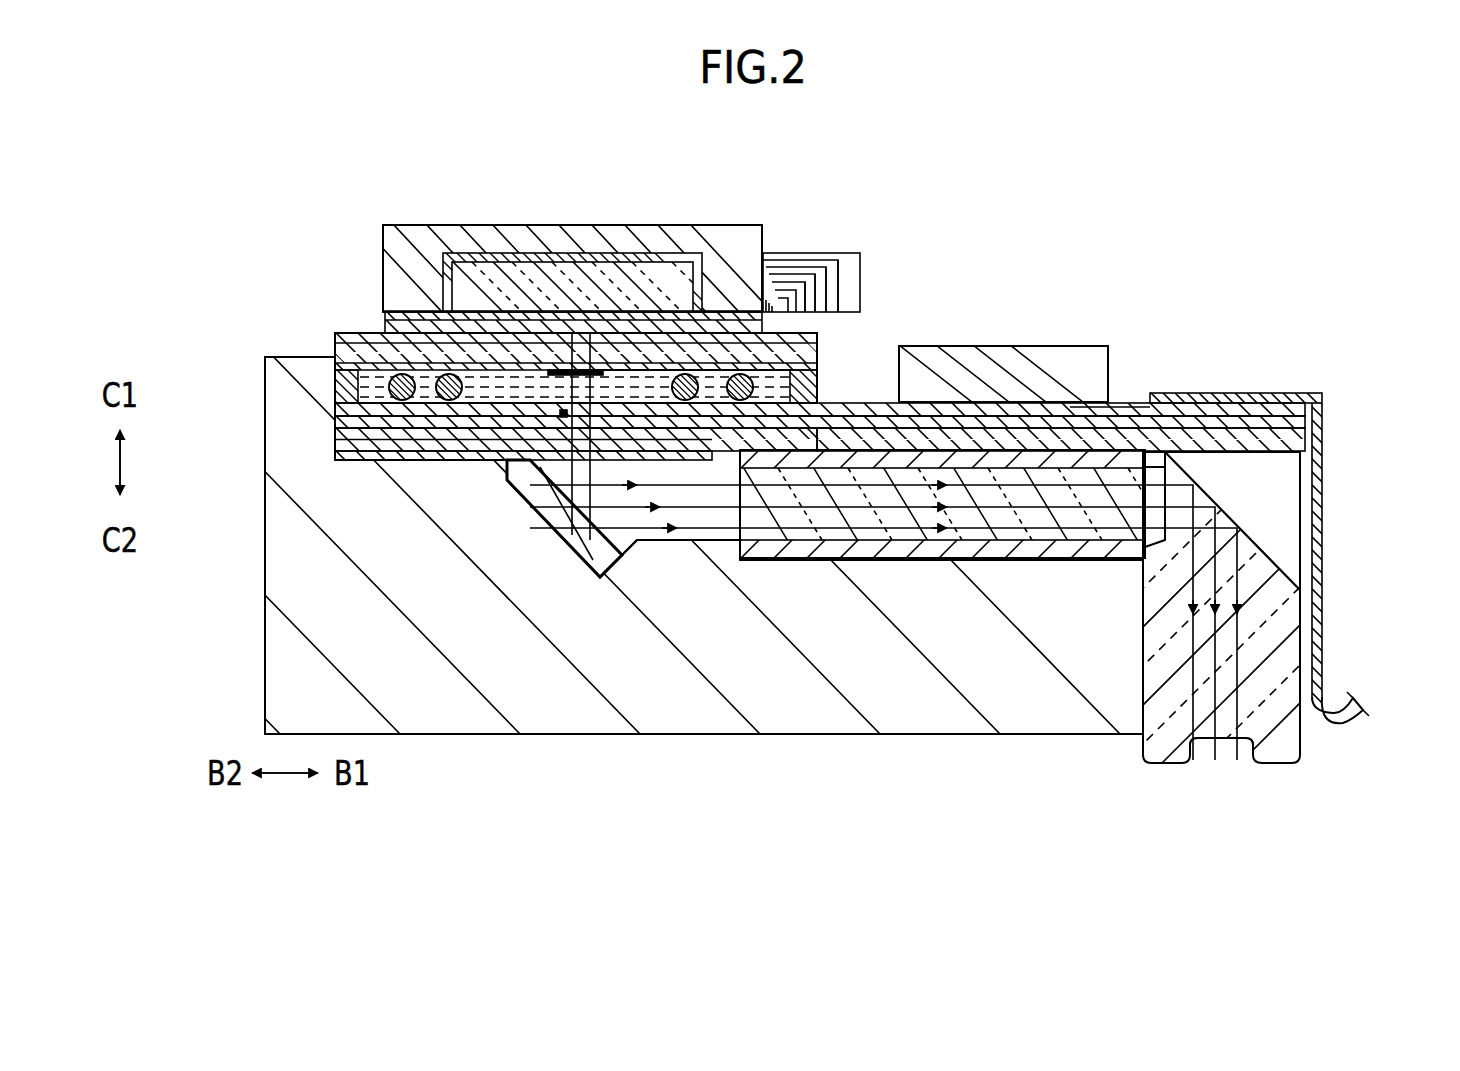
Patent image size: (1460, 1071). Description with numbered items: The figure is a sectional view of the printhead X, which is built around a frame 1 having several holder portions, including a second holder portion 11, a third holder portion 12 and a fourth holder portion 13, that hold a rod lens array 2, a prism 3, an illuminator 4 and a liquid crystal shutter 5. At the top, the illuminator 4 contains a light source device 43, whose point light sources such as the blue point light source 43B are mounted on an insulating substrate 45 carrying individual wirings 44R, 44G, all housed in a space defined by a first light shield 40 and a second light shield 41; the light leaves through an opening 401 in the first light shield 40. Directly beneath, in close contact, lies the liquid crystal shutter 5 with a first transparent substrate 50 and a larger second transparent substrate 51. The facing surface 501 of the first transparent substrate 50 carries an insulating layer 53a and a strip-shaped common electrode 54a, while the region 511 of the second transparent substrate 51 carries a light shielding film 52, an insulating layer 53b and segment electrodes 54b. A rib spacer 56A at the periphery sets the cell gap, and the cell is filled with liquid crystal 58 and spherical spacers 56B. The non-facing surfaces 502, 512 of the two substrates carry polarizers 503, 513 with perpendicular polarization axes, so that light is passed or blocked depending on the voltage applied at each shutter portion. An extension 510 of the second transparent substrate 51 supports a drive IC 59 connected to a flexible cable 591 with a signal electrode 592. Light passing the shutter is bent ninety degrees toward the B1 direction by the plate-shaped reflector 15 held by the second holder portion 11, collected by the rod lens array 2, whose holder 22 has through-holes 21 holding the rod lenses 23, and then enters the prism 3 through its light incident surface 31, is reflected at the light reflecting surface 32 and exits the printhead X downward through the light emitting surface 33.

The frame 1 is at (262, 553).
The rod lens array 2 is at (772, 563).
The prism 3 is at (1265, 542).
The illuminator 4 is at (398, 220).
The liquid crystal shutter 5 is at (1142, 322).
The second holder portion 11 is at (405, 470).
The third holder portion 12 is at (575, 548).
The fourth holder portion 13 is at (975, 563).
The reflector 15 is at (622, 585).
The through-holes 21 is at (900, 545).
The holder 22 is at (827, 563).
The rod lenses 23 is at (1043, 561).
The light incident surface 31 is at (1157, 478).
The light reflecting surface 32 is at (1245, 508).
The light emitting surface 33 is at (1245, 764).
The first light shield 40 is at (383, 323).
The second light shield 41 is at (385, 280).
The light source device 43 is at (787, 250).
The point light source 43B is at (860, 264).
The individual wiring 44G is at (842, 282).
The individual wiring 44R is at (842, 301).
The insulating substrate 45 is at (848, 252).
The first transparent substrate 50 is at (347, 350).
The second transparent substrate 51 is at (343, 441).
The light shielding film 52 is at (332, 423).
The insulating layer 53a is at (820, 367).
The insulating layer 53b is at (332, 412).
The common electrode 54a is at (540, 405).
The segment electrodes 54b is at (335, 399).
The rib spacer 56A is at (815, 381).
The spherical spacers 56B is at (450, 405).
The liquid crystal 58 is at (560, 480).
The drive IC 59 is at (1010, 355).
The opening 401 is at (603, 325).
The facing surface 501 is at (790, 347).
The non-facing surface 502 is at (782, 345).
The polarizer 503 is at (333, 331).
The extension 510 is at (1065, 432).
The region 511 is at (370, 446).
The non-facing surface 512 is at (340, 436).
The polarizer 513 is at (420, 441).
The flexible cable 591 is at (1325, 452).
The signal electrode 592 is at (1318, 586).
The printhead X is at (1010, 185).